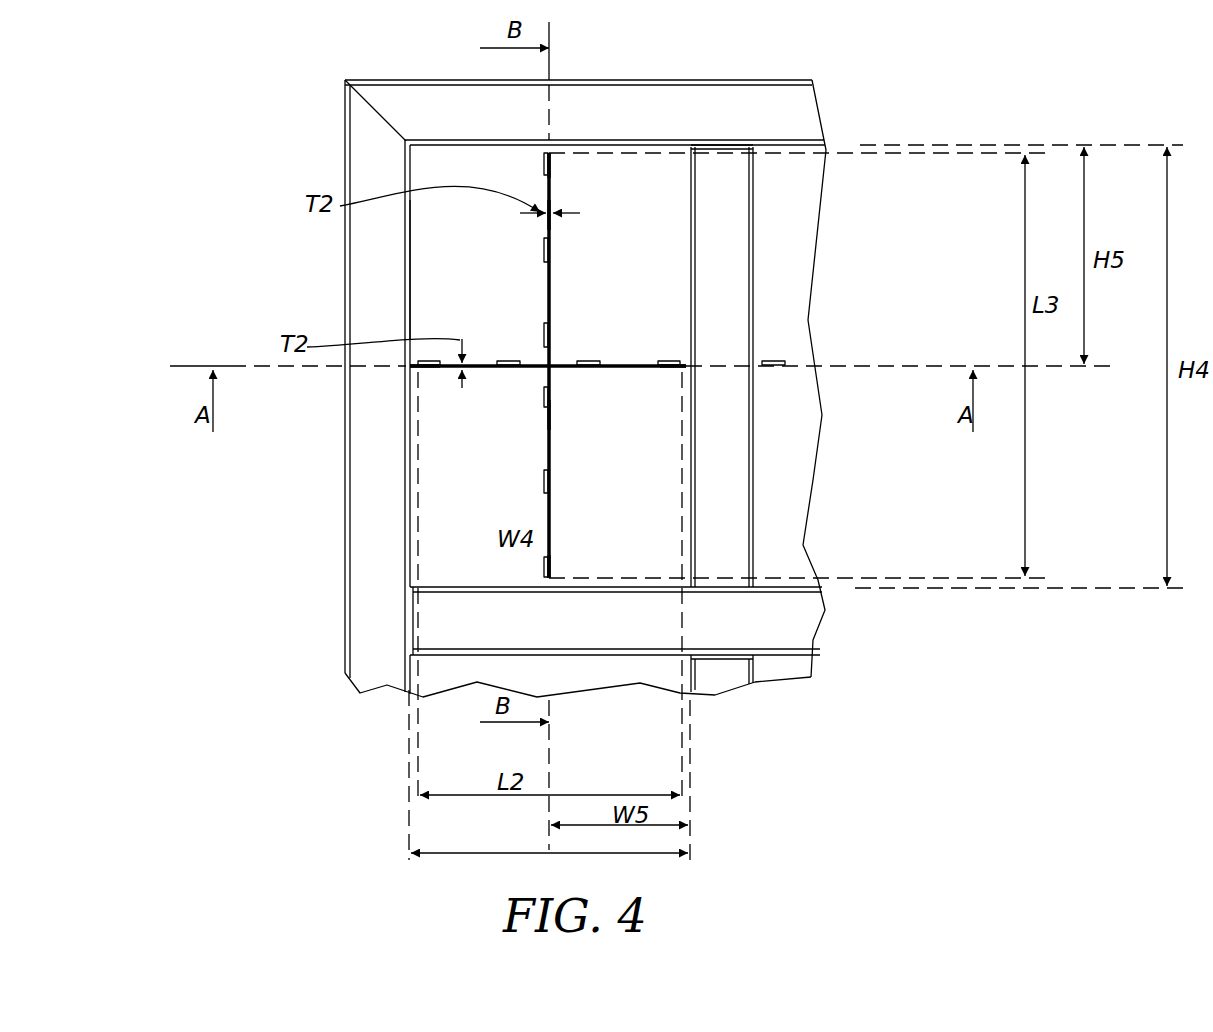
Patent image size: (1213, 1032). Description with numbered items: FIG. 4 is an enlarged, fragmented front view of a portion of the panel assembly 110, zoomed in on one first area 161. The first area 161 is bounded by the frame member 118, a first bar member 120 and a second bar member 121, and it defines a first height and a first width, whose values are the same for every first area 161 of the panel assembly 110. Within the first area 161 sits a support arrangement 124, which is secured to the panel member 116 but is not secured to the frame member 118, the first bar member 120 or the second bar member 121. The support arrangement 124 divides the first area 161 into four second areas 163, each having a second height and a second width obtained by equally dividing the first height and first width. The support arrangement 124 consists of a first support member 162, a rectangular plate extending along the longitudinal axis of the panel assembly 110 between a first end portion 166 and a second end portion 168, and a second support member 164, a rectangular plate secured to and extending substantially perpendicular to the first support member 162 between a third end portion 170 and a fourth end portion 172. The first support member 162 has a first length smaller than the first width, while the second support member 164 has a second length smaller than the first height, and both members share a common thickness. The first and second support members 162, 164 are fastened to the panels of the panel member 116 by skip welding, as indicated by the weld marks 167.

The panel assembly 110 is at (310, 138).
The panel member 116 is at (767, 183).
The frame member 118 is at (325, 77).
The first bar member 120 is at (442, 622).
The second bar member 121 is at (737, 217).
The support arrangement 124 is at (540, 265).
The first area 161 is at (440, 270).
The first support member 162 is at (623, 362).
The second area 163 is at (490, 210).
The second support member 164 is at (553, 413).
The first end portion 166 is at (410, 367).
The weld marks 167 is at (543, 162).
The second end portion 168 is at (683, 362).
The third end portion 170 is at (558, 165).
The fourth end portion 172 is at (558, 567).